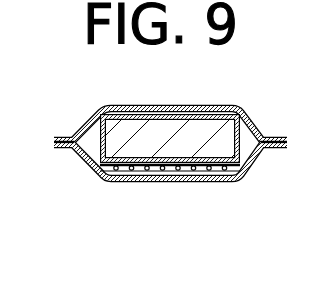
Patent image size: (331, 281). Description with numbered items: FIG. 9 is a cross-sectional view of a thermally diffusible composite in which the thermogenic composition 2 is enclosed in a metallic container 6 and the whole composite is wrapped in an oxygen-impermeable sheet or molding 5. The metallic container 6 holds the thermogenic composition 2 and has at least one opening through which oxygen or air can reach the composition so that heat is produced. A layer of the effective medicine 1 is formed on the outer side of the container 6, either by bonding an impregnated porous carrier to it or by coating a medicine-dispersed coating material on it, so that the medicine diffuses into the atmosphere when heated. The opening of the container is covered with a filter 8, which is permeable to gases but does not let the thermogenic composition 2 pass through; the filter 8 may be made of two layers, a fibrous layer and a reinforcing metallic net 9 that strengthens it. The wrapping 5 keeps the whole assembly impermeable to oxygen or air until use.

The effective medicine 1 is at (218, 116).
The thermogenic composition 2 is at (102, 179).
The upper casing shell 5 is at (89, 121).
The metallic container 6 is at (248, 147).
The filter 8 is at (138, 169).
The metallic net 9 is at (184, 173).